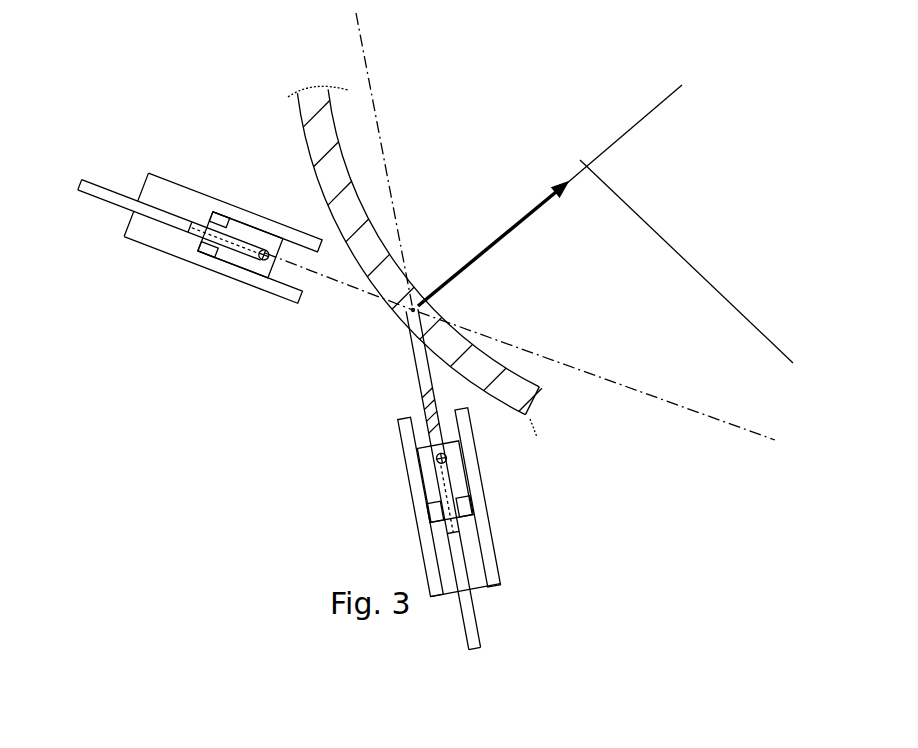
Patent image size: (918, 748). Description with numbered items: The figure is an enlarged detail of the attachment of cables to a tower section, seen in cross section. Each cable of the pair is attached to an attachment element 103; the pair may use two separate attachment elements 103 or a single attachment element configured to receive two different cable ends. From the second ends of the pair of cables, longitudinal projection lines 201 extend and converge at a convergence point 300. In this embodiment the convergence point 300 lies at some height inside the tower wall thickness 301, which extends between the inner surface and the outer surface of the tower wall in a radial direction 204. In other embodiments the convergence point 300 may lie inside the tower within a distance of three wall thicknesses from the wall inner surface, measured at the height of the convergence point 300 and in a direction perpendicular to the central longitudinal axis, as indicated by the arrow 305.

The attachment element 103 is at (330, 282).
The longitudinal projection line 201 is at (363, 49).
The radial direction 204 is at (636, 116).
The convergence point 300 is at (427, 302).
The tower wall thickness 301 is at (428, 83).
The arrow 305 is at (542, 198).